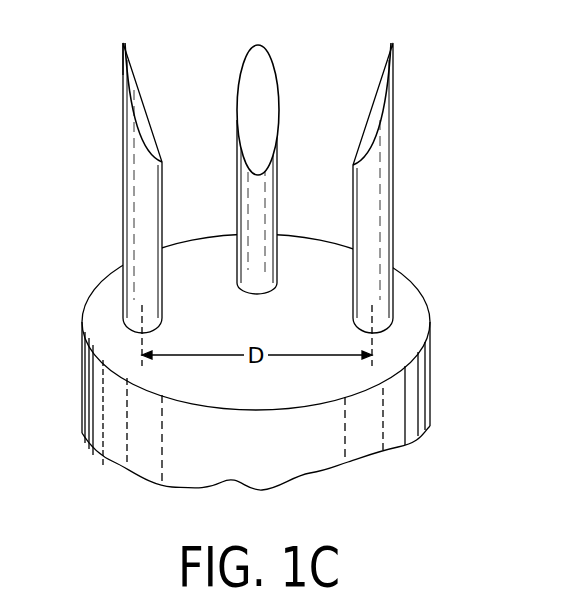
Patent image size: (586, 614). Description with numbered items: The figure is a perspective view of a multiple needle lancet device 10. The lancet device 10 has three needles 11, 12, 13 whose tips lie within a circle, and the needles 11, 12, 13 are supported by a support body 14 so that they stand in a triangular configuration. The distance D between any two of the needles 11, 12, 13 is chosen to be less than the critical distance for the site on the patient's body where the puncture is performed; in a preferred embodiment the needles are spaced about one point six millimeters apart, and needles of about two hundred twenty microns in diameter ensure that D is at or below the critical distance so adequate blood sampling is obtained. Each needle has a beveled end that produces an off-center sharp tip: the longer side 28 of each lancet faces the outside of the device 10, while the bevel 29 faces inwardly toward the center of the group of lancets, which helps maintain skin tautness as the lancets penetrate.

The multiple needle lancet device 10 is at (375, 471).
The needle 11 is at (393, 234).
The needle 12 is at (278, 72).
The needle 13 is at (127, 233).
The support body 14 is at (423, 397).
The longer side 28 is at (123, 96).
The bevel 29 is at (136, 113).